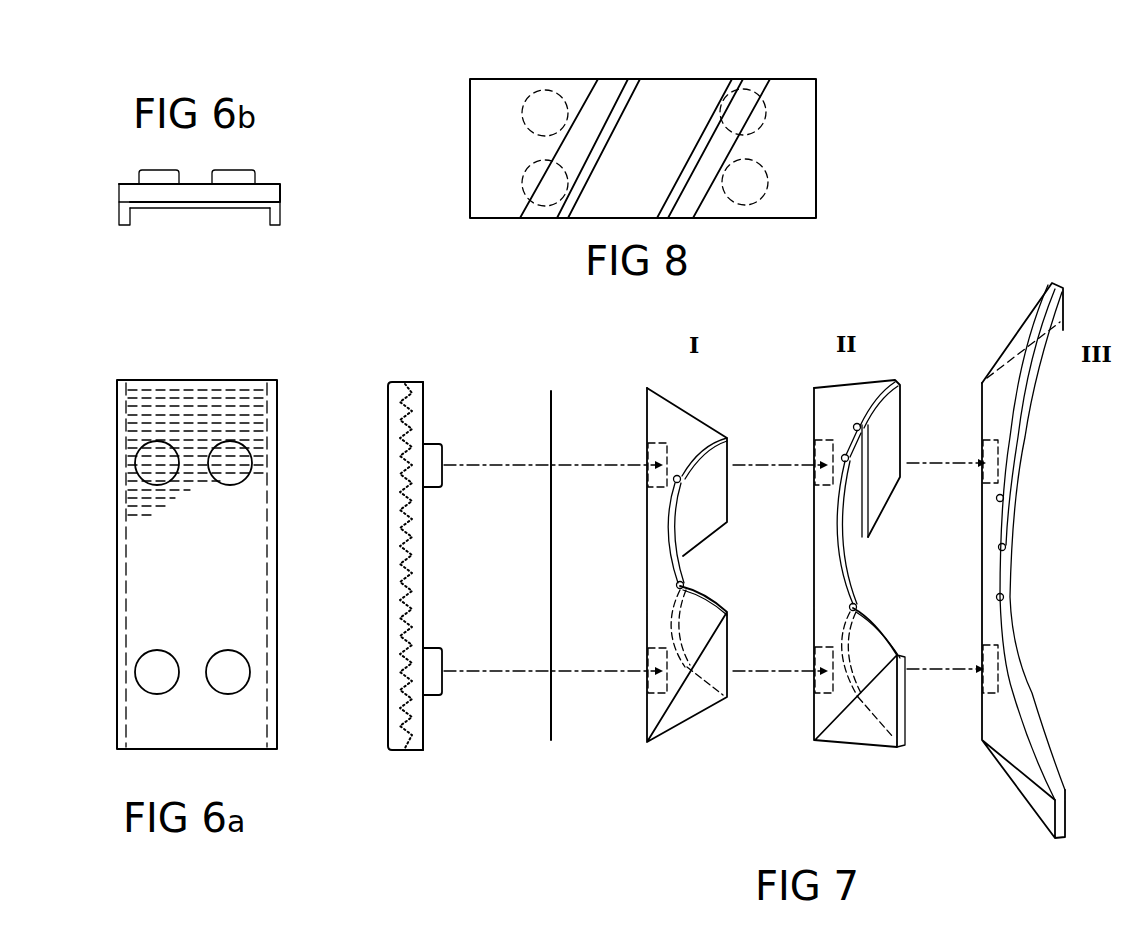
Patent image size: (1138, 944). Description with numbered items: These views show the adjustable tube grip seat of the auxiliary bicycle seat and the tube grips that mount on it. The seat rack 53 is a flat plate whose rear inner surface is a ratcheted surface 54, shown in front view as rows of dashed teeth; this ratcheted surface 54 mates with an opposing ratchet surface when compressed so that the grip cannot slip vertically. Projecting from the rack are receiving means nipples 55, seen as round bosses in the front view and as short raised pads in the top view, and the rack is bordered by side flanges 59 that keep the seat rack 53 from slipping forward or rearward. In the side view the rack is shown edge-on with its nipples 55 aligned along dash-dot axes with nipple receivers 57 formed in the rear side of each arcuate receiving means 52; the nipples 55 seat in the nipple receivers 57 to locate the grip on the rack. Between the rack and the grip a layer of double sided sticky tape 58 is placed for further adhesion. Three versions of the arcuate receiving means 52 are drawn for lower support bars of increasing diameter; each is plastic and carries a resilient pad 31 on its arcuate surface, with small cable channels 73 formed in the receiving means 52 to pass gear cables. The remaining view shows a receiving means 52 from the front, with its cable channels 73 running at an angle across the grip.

In FIG. 7, the resilient pad 31 is at (728, 439).
In FIG. 7, the arcuate receiving means 52 is at (690, 720).
In FIG. 6A, the seat rack 53 is at (167, 379).
In FIG. 7, the seat rack 53 is at (424, 533).
In FIG. 6B, the ratcheted rear inner surface 54 is at (160, 210).
In FIG. 6A, the ratcheted rear inner surface 54 is at (222, 400).
In FIG. 7, the ratcheted rear inner surface 54 is at (407, 400).
In FIG. 6B, the receiving means nipples 55 is at (148, 168).
In FIG. 6A, the receiving means nipples 55 is at (140, 658).
In FIG. 7, the receiving means nipples 55 is at (427, 443).
In FIG. 7, the nipple receivers 57 is at (652, 458).
In FIG. 7, the double sided sticky tape 58 is at (550, 713).
In FIG. 6B, the side flanges 59 is at (282, 215).
In FIG. 7, the side flanges 59 is at (388, 483).
In FIG. 8, the cable channels 73 is at (737, 82).
In FIG. 7, the cable channels 73 is at (680, 482).